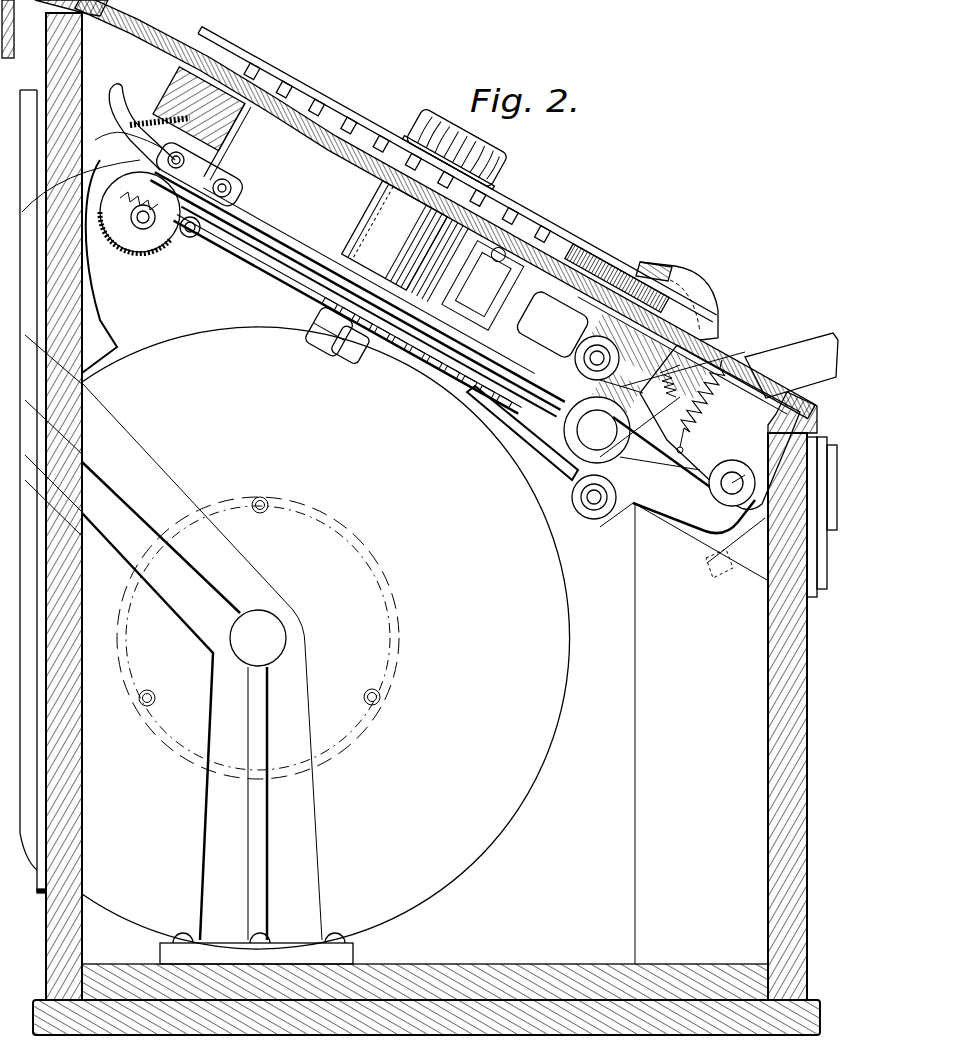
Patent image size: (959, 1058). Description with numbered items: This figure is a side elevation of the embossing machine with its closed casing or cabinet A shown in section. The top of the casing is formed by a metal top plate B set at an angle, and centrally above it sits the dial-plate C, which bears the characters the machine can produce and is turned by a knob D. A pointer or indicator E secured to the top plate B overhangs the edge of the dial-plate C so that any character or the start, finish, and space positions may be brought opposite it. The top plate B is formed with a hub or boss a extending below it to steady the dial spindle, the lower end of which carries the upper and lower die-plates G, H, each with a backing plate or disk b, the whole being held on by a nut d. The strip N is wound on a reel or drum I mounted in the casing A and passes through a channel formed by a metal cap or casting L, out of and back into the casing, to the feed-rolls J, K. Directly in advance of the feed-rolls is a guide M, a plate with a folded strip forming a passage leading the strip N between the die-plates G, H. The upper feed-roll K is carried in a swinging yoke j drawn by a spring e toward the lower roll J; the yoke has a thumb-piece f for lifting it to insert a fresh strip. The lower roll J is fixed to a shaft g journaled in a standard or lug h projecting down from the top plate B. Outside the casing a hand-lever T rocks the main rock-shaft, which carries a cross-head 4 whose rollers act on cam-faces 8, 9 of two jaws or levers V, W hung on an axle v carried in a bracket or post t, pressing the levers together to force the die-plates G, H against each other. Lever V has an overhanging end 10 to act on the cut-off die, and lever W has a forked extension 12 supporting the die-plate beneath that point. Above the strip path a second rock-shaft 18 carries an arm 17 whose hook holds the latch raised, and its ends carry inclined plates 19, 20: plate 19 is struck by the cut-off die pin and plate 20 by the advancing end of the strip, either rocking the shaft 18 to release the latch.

The casing or cabinet A is at (768, 783).
The top plate B is at (173, 54).
The dial-plate C is at (550, 230).
The knob D is at (515, 158).
The pointer or indicator E is at (657, 264).
The hand-lever T is at (791, 365).
The reel or drum I is at (326, 638).
The metal cap or casting L is at (83, 387).
The strip N is at (116, 159).
The thumb-piece or extension f is at (127, 92).
The standard or lug h is at (193, 88).
The swinging frame or yoke j is at (117, 143).
The feed-roll K is at (200, 148).
The feed-roll J is at (150, 253).
The spring e is at (140, 200).
The shaft or axle g is at (123, 227).
The die-plate H is at (230, 247).
The guide M is at (253, 265).
The die-plate G is at (257, 223).
The backing plate or disk b is at (323, 240).
The nut d is at (323, 317).
The hub or boss a is at (405, 241).
The inclined bearing face or plate 19 is at (460, 302).
The overhanging outer end 10 is at (607, 359).
The extension 12 is at (480, 408).
The double arm or cross-head 4 is at (567, 477).
The cam-face 9 is at (573, 488).
The jaw or lever W is at (677, 456).
The jaw or lever V is at (661, 462).
The axle or rod v is at (701, 734).
The bracket or post t is at (720, 427).
The cam-face 8 is at (643, 400).
The arm 17 is at (675, 381).
The rock-shaft 18 is at (704, 406).
The inclined plate 20 is at (735, 548).